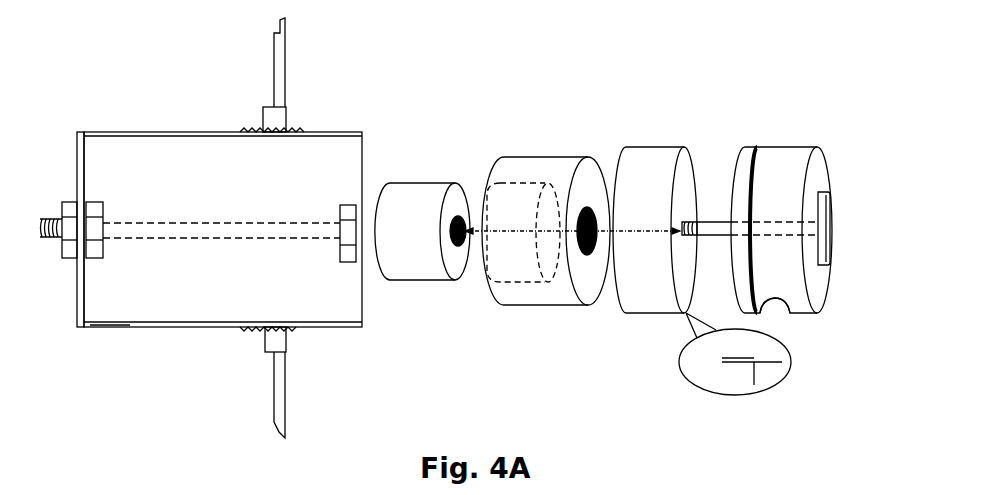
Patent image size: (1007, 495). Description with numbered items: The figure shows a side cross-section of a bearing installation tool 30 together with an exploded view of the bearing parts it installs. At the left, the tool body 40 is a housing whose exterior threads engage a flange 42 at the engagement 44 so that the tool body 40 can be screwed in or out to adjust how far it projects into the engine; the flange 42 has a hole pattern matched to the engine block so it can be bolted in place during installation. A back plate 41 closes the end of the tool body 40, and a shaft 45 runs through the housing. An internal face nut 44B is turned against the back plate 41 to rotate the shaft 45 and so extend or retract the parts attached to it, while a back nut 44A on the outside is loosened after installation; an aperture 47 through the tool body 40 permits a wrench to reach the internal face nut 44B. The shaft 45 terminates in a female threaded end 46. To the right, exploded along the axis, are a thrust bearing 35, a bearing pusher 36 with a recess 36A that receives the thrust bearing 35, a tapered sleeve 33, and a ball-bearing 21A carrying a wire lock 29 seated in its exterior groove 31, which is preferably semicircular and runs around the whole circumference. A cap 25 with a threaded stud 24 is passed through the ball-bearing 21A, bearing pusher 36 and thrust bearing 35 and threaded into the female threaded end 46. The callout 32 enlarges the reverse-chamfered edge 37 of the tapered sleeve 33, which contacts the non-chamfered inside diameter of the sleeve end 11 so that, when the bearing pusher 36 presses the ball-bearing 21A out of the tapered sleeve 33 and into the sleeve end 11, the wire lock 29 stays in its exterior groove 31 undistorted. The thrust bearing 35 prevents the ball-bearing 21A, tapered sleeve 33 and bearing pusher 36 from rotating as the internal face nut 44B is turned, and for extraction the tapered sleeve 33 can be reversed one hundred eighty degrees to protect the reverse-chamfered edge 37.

The bearing installation tool 30 is at (197, 88).
The tool body 40 is at (212, 327).
The back plate 41 is at (75, 150).
The flange 42 is at (285, 362).
The clamp tab 44 is at (262, 330).
The back nut 44A is at (58, 255).
The internal face nut 44B is at (95, 258).
The shaft 45 is at (165, 222).
The female threaded end 46 is at (338, 253).
The aperture 47 is at (125, 327).
The thrust bearing 35 is at (425, 281).
The bearing pusher 36 is at (556, 308).
The recess 36A is at (500, 282).
The tapered sleeve 33 is at (648, 147).
The threaded stud 24 is at (697, 237).
The ball-bearing 21A is at (785, 147).
The wire lock 29 is at (757, 146).
The exterior groove 31 is at (790, 313).
The cap 25 is at (830, 235).
The callout 32 is at (710, 378).
The reverse-chamfered edge 37 is at (730, 358).
The sleeve end 11 is at (773, 362).